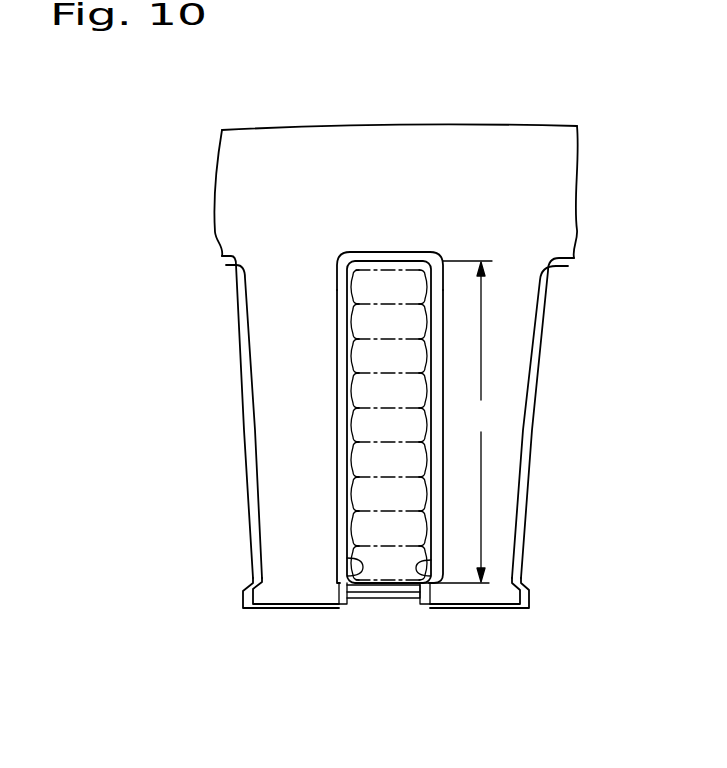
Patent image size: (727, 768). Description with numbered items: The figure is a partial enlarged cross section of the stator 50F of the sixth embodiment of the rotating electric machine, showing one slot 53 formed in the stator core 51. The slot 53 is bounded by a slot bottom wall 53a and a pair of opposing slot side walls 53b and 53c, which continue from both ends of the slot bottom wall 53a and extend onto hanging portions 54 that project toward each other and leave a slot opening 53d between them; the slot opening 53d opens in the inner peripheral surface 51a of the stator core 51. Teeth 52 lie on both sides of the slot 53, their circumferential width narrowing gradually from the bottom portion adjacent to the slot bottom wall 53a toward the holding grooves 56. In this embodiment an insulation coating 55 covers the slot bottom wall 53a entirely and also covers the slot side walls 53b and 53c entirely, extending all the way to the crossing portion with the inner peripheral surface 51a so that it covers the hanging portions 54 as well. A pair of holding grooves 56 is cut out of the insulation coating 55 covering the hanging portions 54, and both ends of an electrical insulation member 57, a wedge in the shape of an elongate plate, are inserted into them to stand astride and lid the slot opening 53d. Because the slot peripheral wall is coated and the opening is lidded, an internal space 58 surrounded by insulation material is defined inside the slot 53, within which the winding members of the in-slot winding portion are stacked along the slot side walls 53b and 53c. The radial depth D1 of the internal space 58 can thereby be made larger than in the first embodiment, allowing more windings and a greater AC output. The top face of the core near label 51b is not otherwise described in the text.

The stator 50F is at (472, 78).
The stator core 51 is at (497, 126).
The inner peripheral surface 51a is at (277, 609).
The top wall of housing 51b is at (333, 128).
The teeth 52 is at (266, 431).
The slot 53 is at (347, 402).
The slot bottom wall 53a is at (385, 252).
The slot side wall 53b is at (336, 325).
The slot side wall 53c is at (442, 313).
The slot opening 53d is at (383, 603).
The hanging portions 54 is at (322, 608).
The insulation coating 55 is at (338, 505).
The holding grooves 56 is at (352, 572).
The electrical insulation member 57 is at (358, 603).
The internal space 58 is at (347, 469).
The depth of the internal space D1 is at (457, 422).